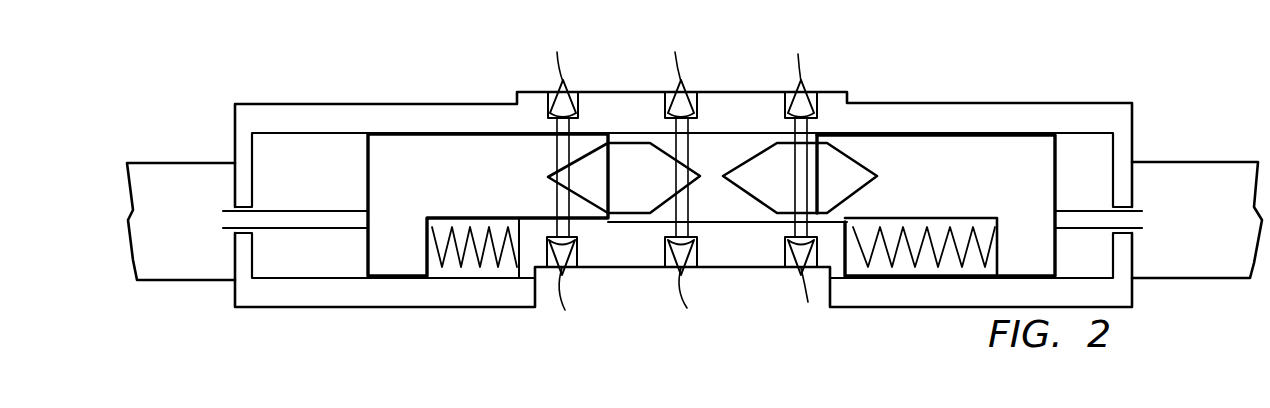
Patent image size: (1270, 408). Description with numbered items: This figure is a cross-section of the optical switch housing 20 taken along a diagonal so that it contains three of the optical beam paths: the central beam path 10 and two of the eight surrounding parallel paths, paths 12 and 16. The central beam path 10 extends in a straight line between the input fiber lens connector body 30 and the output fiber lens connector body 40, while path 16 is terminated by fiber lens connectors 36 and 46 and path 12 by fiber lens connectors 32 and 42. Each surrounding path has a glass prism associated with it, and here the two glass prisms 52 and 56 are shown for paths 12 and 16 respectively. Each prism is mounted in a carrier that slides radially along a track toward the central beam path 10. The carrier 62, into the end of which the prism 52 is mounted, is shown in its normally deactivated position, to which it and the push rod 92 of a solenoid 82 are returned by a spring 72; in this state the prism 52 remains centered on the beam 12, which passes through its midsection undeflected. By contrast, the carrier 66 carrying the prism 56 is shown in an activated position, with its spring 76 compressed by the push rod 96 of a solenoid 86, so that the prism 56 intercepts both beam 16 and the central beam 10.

The housing 20 is at (312, 300).
The solenoid 86 is at (193, 216).
The solenoid 82 is at (1190, 199).
The push rod 96 is at (310, 205).
The push rod 92 is at (1084, 205).
The carrier 66 is at (443, 177).
The carrier 62 is at (1006, 179).
The glass prism 56 is at (653, 182).
The glass prism 52 is at (783, 177).
The optical beam path 16 is at (557, 205).
The central beam path 10 is at (688, 202).
The optical beam path 12 is at (800, 203).
The fiber lens connector 46 is at (568, 93).
The fiber lens connector body 40 is at (684, 93).
The fiber lens connector 42 is at (803, 93).
The fiber lens connector 36 is at (565, 263).
The fiber lens connector body 30 is at (686, 263).
The fiber lens connector 32 is at (798, 262).
The spring 76 is at (477, 258).
The spring 72 is at (895, 263).